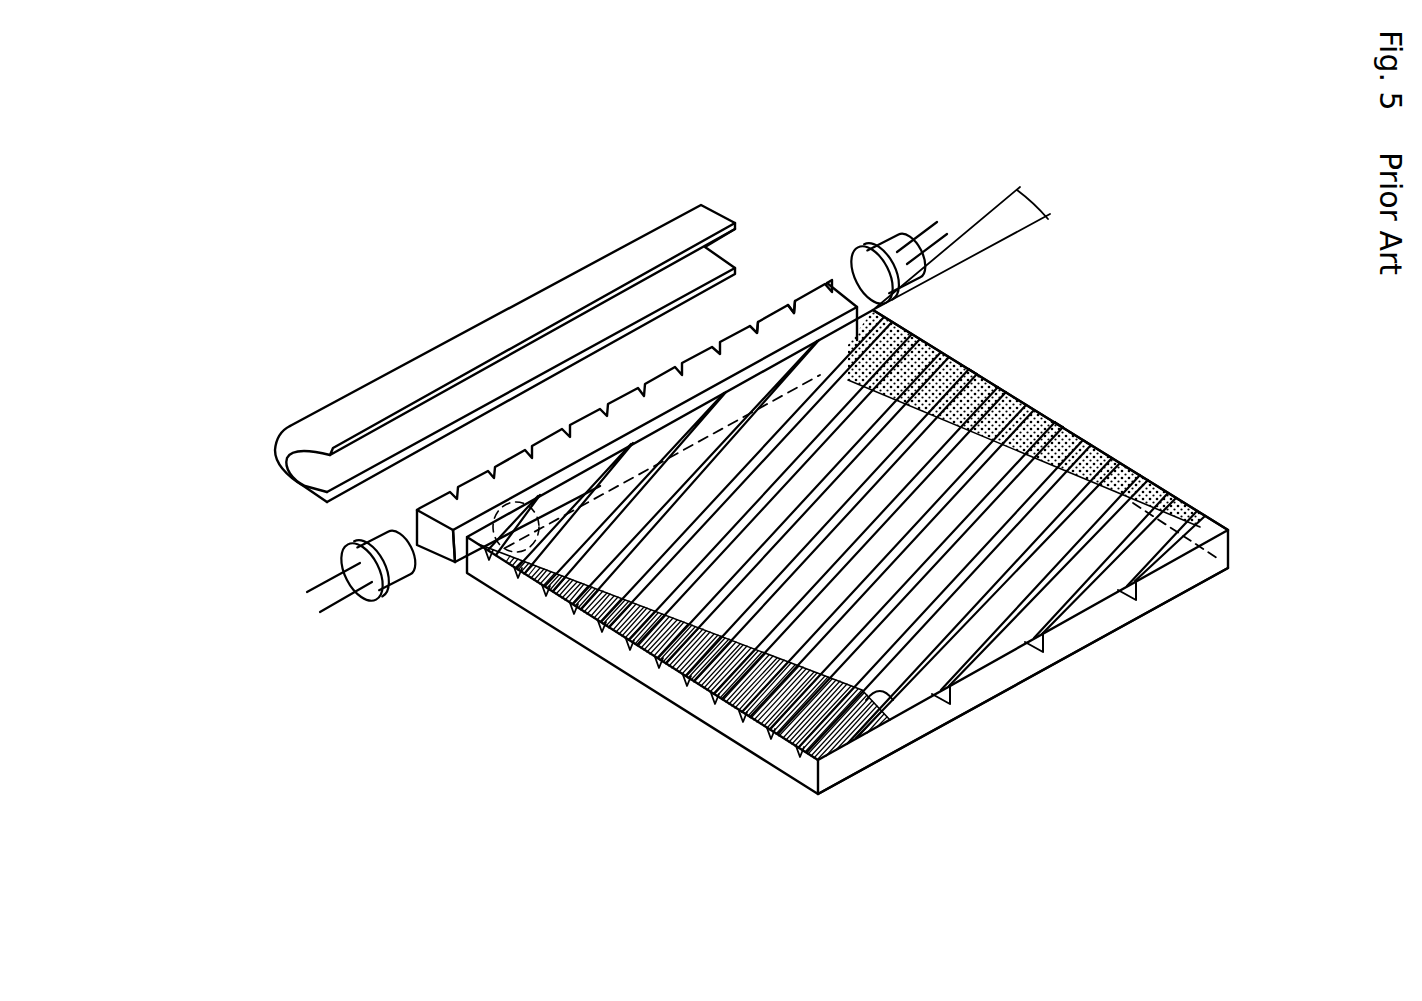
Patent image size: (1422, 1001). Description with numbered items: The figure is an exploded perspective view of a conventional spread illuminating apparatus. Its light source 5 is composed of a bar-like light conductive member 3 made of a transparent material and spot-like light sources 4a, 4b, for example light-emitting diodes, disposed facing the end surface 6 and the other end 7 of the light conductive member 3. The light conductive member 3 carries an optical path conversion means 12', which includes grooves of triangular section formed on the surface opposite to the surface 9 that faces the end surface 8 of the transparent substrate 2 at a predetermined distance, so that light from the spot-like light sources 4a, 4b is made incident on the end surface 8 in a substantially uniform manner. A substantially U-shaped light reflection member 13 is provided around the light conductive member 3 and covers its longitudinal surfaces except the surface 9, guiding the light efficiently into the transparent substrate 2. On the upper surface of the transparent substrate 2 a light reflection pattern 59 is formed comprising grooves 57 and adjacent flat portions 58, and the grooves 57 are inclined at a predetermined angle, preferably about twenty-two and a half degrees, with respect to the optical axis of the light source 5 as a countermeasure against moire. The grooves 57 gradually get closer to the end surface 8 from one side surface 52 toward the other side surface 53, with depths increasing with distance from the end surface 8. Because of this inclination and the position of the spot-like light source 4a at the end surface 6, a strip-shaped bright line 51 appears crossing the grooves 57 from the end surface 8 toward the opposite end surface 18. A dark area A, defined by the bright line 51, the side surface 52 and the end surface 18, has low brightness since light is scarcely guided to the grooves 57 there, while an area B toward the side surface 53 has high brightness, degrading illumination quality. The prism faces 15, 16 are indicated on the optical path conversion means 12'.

The transparent substrate 2 is at (630, 677).
The light conductive member 3 is at (420, 508).
The spot-like light source 4a is at (365, 538).
The spot-like light source 4b is at (897, 257).
The light source 5 is at (187, 463).
The end surface 6 is at (425, 552).
The end 7 is at (843, 293).
The end surface 8 is at (493, 552).
The surface 9 is at (462, 554).
The optical path conversion means 12' is at (631, 298).
The light reflection member 13 is at (456, 315).
The prism face 15 is at (735, 336).
The prism face 16 is at (767, 313).
The end surface 18 is at (870, 753).
The bright line 51 is at (937, 723).
The side surface 52 is at (713, 713).
The side surface 53 is at (1130, 463).
The grooves 57 is at (1063, 433).
The flat portions 58 is at (1093, 450).
The light reflection pattern 59 is at (1175, 332).
The dark area A is at (757, 717).
The area B is at (973, 373).